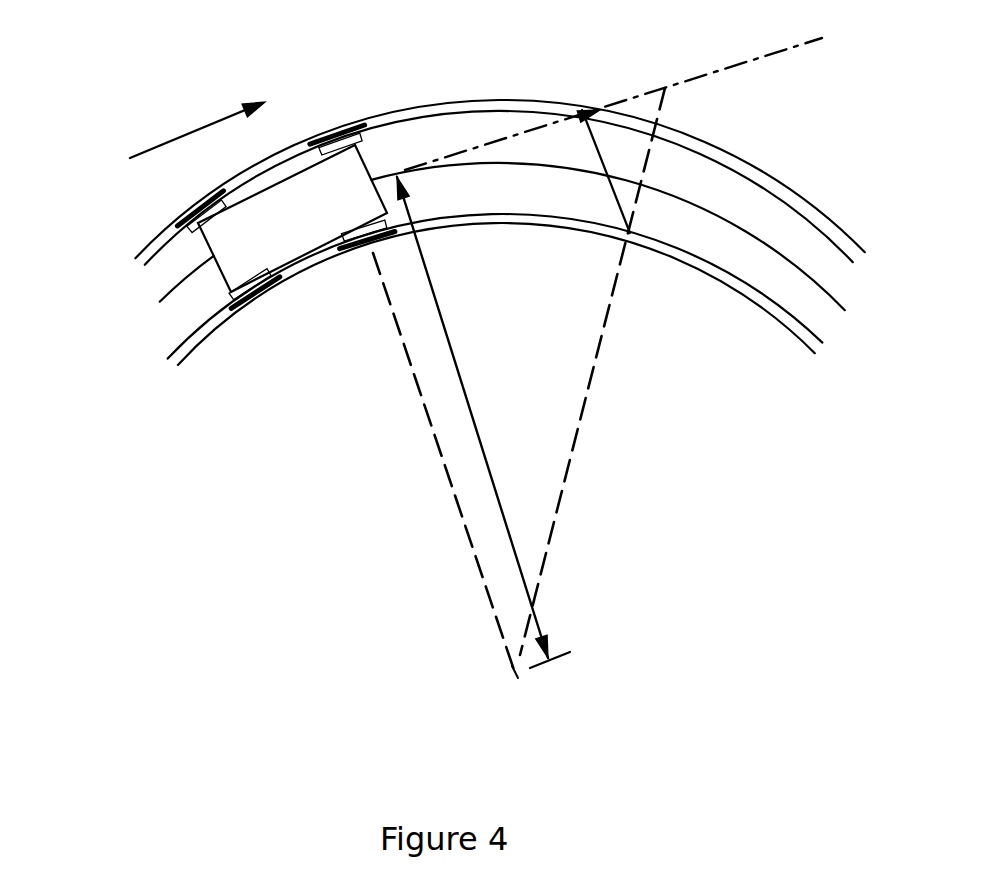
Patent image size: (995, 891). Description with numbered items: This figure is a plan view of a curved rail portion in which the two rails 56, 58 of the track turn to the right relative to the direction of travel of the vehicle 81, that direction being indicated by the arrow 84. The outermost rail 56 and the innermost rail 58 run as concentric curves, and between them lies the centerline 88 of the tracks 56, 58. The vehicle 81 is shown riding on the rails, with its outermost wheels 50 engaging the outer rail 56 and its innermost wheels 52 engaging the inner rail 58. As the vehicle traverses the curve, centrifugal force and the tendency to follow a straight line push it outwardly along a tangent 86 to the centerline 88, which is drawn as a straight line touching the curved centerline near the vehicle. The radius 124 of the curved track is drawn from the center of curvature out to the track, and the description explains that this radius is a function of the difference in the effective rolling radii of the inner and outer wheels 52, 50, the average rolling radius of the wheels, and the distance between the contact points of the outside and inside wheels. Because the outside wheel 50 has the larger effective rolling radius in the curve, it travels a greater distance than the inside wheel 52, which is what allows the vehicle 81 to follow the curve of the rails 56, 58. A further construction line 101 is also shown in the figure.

The outermost wheels 50 is at (338, 125).
The innermost wheels 52 is at (363, 248).
The outermost rail 56 is at (140, 252).
The innermost rail 58 is at (196, 352).
The vehicle 81 is at (305, 241).
The arrow indicating direction of travel 84 is at (200, 128).
The tangent 86 is at (723, 70).
The centerline 88 is at (162, 301).
The chord line 101 is at (614, 120).
The radius of the curved track 124 is at (468, 405).